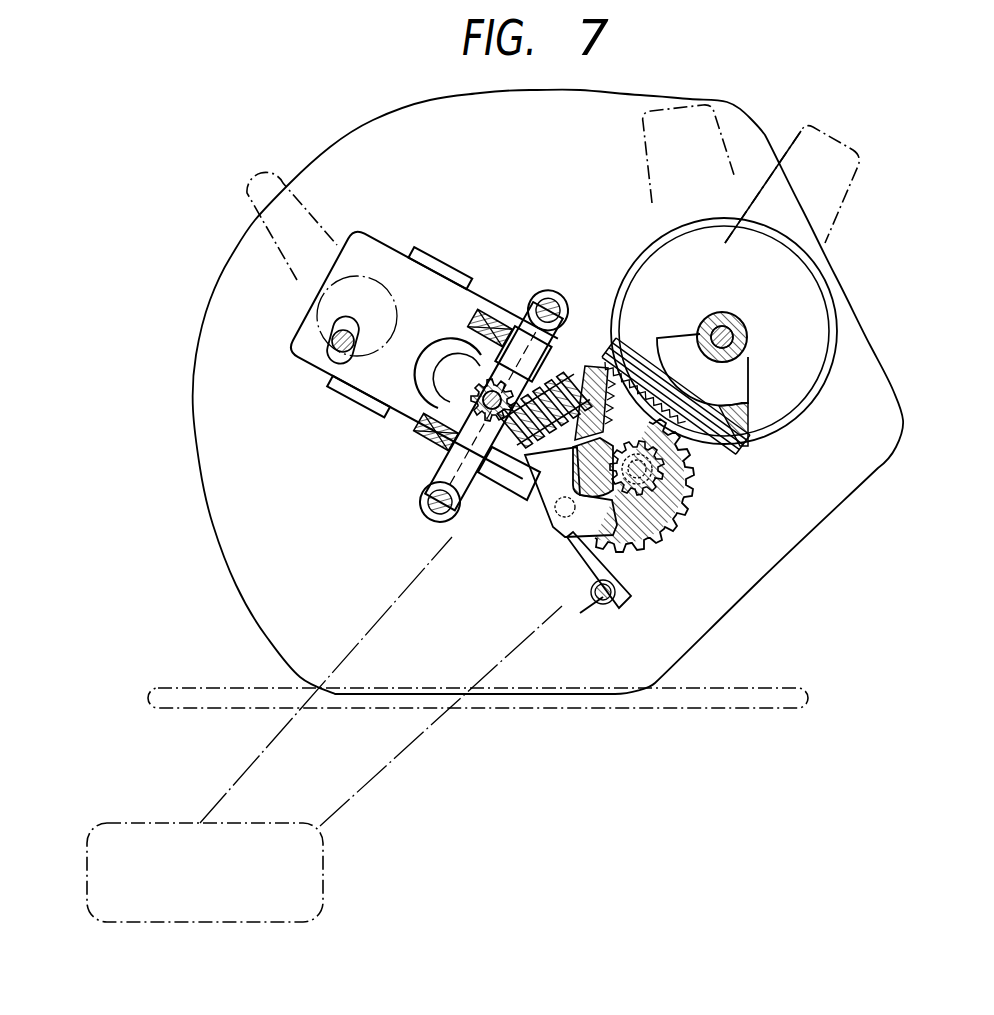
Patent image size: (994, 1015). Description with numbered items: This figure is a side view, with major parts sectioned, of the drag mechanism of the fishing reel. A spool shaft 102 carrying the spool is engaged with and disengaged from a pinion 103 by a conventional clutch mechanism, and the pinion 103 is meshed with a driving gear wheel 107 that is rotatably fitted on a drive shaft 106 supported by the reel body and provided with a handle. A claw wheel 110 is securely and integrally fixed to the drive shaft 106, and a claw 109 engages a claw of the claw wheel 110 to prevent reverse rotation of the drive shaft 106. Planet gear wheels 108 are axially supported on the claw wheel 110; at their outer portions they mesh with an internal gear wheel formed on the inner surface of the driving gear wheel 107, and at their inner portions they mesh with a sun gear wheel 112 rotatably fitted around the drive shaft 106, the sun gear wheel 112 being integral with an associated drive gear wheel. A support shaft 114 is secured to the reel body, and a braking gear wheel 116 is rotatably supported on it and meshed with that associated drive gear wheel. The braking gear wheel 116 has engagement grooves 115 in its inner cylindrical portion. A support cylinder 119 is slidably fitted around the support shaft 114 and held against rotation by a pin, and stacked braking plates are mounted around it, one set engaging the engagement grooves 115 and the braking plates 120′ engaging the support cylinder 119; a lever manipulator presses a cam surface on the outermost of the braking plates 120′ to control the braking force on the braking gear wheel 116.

The spool shaft 102 is at (490, 385).
The pinion 103 is at (440, 455).
The drive shaft 106 is at (603, 500).
The driving gear wheel 107 is at (672, 497).
The planet gear wheels 108 is at (582, 370).
The claw 109 is at (583, 563).
The claw wheel 110 is at (552, 525).
The sun gear wheel 112 is at (655, 518).
The support shaft 114 is at (748, 338).
The engagement grooves 115 is at (737, 420).
The braking gear wheel 116 is at (718, 437).
The support cylinder 119 is at (804, 312).
The braking plates 120′ is at (730, 373).